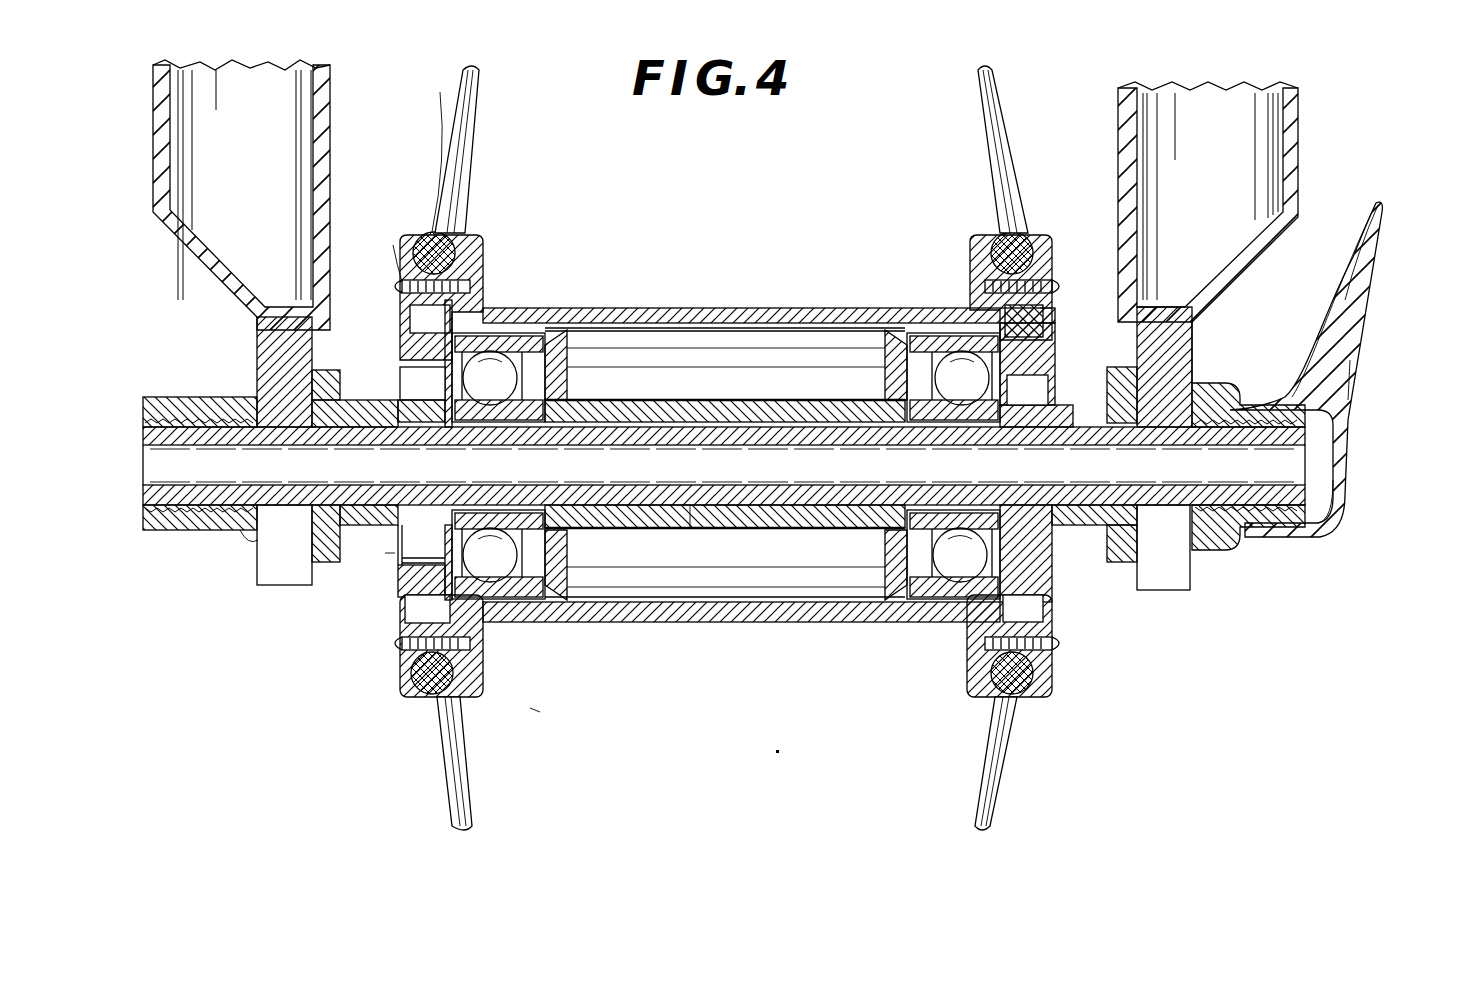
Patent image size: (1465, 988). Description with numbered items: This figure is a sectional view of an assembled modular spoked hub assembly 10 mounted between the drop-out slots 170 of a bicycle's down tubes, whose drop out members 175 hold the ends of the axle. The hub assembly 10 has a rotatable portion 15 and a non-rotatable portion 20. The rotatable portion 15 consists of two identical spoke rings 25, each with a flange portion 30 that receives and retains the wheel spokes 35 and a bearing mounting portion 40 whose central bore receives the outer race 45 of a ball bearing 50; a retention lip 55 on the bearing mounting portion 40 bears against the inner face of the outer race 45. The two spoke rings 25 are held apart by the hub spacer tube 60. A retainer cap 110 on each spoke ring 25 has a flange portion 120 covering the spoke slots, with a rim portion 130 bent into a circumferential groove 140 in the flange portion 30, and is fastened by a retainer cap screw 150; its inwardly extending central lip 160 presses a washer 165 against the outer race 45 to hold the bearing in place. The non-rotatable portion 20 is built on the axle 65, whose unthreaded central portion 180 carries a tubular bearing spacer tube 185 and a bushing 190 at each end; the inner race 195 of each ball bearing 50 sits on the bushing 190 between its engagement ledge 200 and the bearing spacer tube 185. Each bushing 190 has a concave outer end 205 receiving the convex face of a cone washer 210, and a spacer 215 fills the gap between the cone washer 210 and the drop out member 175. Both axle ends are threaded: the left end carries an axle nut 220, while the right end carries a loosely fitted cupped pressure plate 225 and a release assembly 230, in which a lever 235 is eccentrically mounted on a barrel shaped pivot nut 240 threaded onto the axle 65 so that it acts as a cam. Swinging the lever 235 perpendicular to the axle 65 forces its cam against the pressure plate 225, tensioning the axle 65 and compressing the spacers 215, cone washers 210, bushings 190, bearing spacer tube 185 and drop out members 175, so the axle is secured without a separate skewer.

The modular spoked hub assembly 10 is at (754, 282).
The rotatable portion 15 is at (536, 710).
The non-rotatable portion 20 is at (384, 554).
The spoke ring 25 is at (480, 238).
The flange portion 30 is at (400, 313).
The wheel spoke 35 is at (480, 110).
The bearing mounting portion 40 is at (545, 322).
The outer race 45 is at (492, 345).
The ball bearing 50 is at (590, 316).
The retention lip 55 is at (484, 335).
The hub spacer tube 60 is at (840, 310).
The axle 65 is at (770, 604).
The retainer cap 110 is at (431, 232).
The flange portion 120 is at (399, 282).
The rim portion 130 is at (1032, 186).
The circumferential groove 140 is at (432, 698).
The retainer cap screw 150 is at (394, 652).
The central lip 160 is at (480, 640).
The washer 165 is at (1046, 310).
The drop-out slot 170 is at (1348, 200).
The drop out member 175 is at (262, 350).
The unthreaded central portion 180 is at (690, 575).
The bearing spacer tube 185 is at (720, 413).
The bushing 190 is at (418, 385).
The inner race 195 is at (566, 390).
The engagement ledge 200 is at (560, 546).
The concave outer end 205 is at (988, 410).
The cone washer 210 is at (414, 380).
The spacer 215 is at (1075, 572).
The axle nut 220 is at (152, 398).
The cupped pressure plate 225 is at (1228, 548).
The release assembly 230 is at (1388, 388).
The lever 235 is at (1352, 292).
The pivot nut 240 is at (1340, 498).